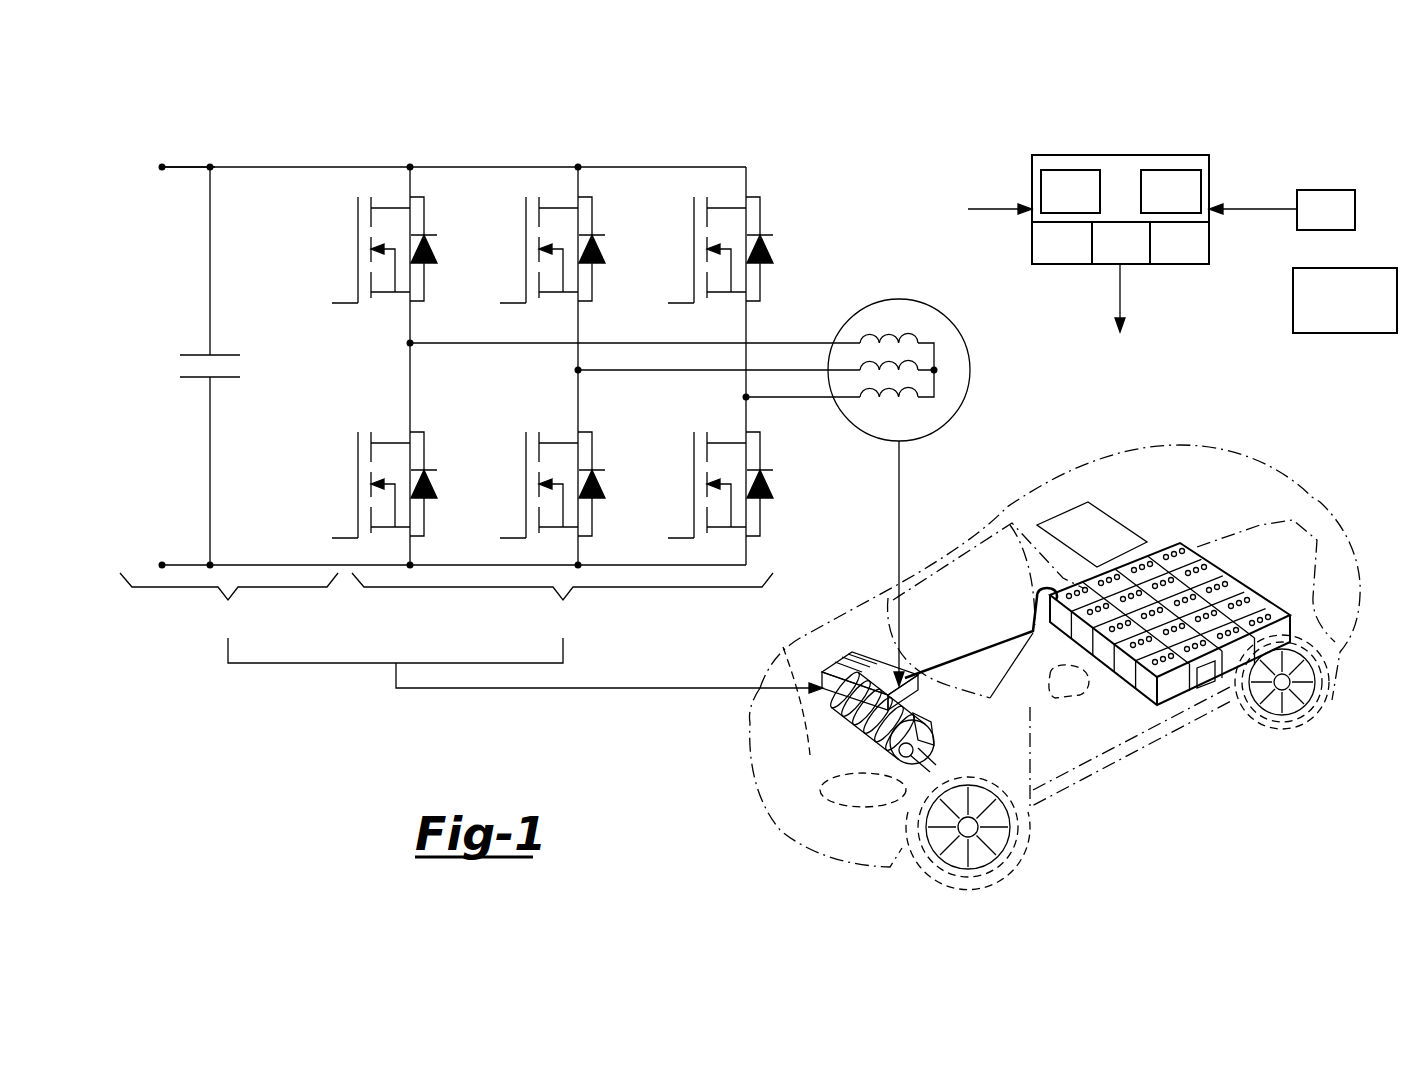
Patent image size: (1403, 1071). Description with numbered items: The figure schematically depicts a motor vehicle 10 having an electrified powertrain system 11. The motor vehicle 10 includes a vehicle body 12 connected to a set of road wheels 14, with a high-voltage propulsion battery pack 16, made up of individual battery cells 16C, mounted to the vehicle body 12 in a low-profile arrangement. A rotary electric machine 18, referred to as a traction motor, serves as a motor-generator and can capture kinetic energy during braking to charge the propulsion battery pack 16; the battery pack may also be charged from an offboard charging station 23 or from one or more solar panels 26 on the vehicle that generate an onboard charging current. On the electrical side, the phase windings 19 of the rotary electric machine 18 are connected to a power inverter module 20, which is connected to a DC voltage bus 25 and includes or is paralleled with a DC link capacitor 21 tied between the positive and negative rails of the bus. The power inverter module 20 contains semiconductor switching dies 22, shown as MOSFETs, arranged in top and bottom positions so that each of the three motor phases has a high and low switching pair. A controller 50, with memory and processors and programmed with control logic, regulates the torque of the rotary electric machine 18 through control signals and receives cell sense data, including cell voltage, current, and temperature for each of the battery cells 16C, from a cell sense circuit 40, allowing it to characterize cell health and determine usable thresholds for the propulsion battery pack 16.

The motor vehicle 10 is at (1262, 41).
The electrified powertrain system 11 is at (828, 738).
The vehicle body 12 is at (1212, 448).
The road wheels 14 is at (1296, 716).
The propulsion battery pack 16 is at (1330, 627).
The battery cells 16C is at (1212, 674).
The rotary electric machine 18 is at (970, 370).
The phase windings 19 is at (897, 318).
The power inverter module 20 is at (747, 115).
The DC link capacitor 21 is at (176, 341).
The semiconductor switching dies 22 is at (446, 230).
The offboard charging station 23 is at (1293, 300).
The DC voltage bus 25 is at (187, 165).
The solar panels 26 is at (1072, 520).
The cell sense circuit 40 is at (1326, 190).
The controller 50 is at (1118, 155).